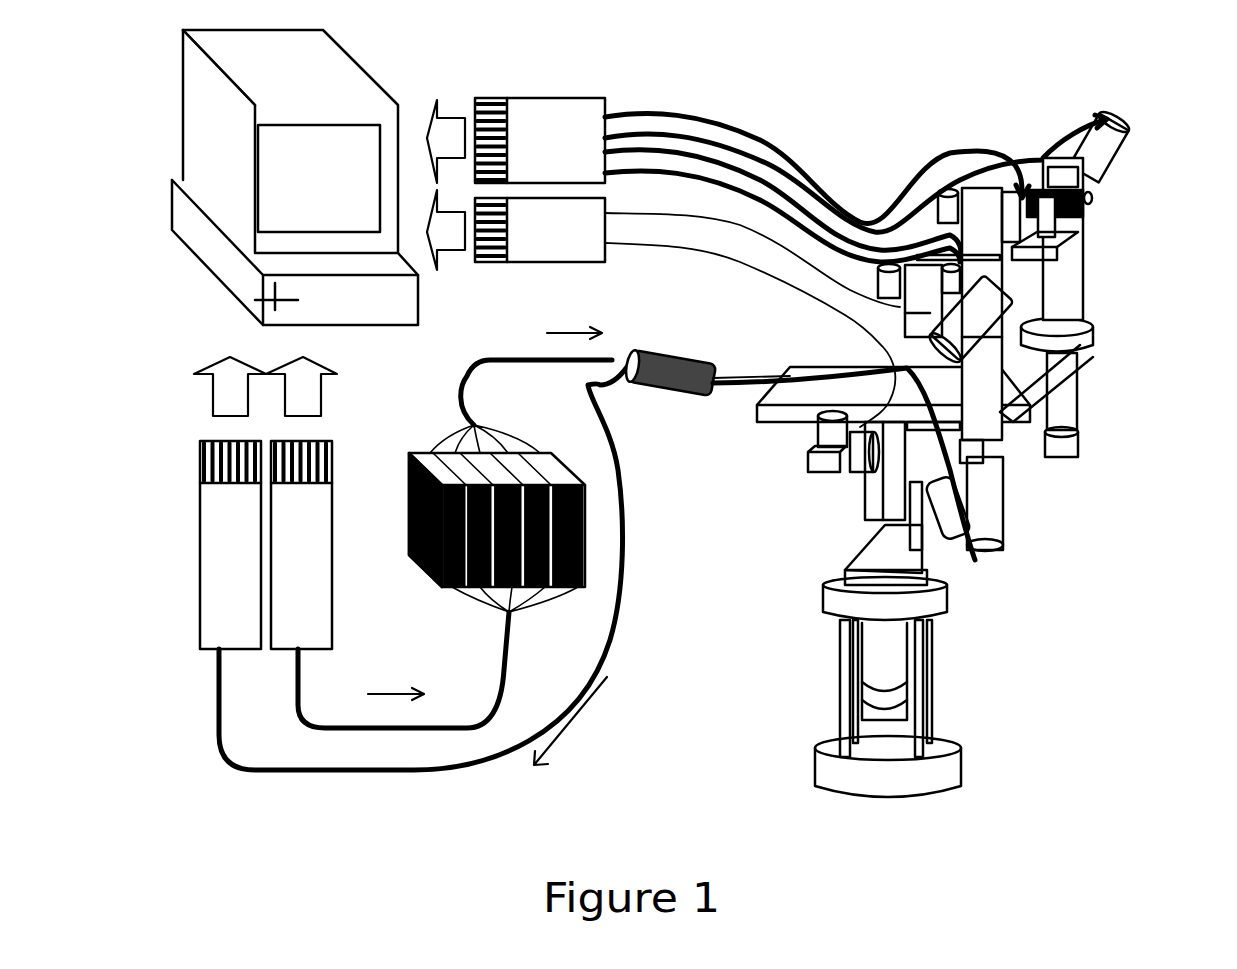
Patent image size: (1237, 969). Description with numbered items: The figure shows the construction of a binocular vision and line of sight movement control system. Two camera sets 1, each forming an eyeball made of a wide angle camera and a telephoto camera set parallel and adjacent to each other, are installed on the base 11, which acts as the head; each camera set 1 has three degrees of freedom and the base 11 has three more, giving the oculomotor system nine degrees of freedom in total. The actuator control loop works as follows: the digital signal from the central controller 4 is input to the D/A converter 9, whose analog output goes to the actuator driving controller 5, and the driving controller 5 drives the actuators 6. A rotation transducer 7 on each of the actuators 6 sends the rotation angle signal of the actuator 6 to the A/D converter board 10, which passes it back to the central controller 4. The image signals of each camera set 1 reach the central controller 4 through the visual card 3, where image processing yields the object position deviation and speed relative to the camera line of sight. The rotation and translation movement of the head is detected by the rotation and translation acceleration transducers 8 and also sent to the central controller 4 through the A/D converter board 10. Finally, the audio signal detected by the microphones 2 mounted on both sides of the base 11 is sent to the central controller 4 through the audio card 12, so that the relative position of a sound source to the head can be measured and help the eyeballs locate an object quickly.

The camera set 1 is at (1063, 207).
The microphone 2 is at (863, 457).
The visual card 3 is at (547, 108).
The central controller 4 is at (192, 237).
The actuator driving controller 5 is at (432, 467).
The actuator 6 is at (1103, 175).
The rotation transducer 7 is at (878, 258).
The rotation and translation acceleration transducer 8 is at (900, 315).
The D/A converter 9 is at (333, 599).
The A/D converter board 10 is at (203, 573).
The base 11 is at (787, 375).
The audio card 12 is at (545, 253).